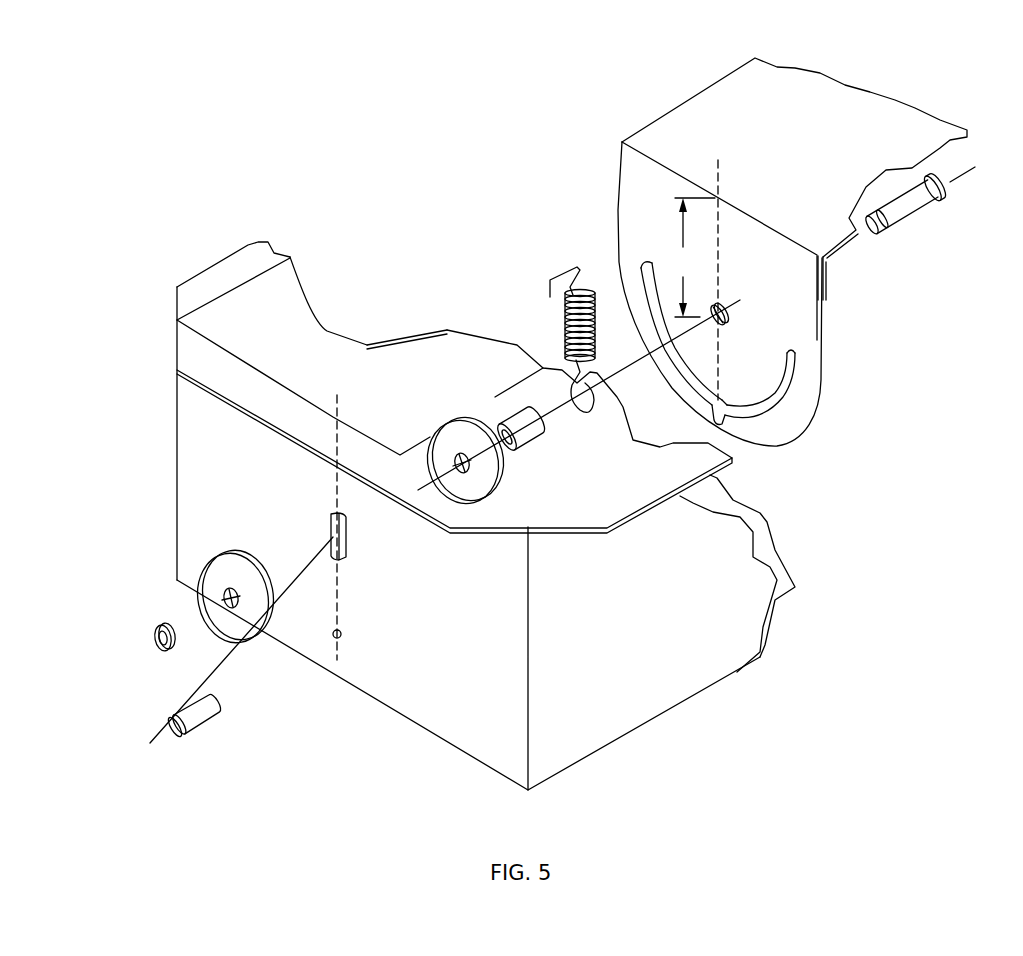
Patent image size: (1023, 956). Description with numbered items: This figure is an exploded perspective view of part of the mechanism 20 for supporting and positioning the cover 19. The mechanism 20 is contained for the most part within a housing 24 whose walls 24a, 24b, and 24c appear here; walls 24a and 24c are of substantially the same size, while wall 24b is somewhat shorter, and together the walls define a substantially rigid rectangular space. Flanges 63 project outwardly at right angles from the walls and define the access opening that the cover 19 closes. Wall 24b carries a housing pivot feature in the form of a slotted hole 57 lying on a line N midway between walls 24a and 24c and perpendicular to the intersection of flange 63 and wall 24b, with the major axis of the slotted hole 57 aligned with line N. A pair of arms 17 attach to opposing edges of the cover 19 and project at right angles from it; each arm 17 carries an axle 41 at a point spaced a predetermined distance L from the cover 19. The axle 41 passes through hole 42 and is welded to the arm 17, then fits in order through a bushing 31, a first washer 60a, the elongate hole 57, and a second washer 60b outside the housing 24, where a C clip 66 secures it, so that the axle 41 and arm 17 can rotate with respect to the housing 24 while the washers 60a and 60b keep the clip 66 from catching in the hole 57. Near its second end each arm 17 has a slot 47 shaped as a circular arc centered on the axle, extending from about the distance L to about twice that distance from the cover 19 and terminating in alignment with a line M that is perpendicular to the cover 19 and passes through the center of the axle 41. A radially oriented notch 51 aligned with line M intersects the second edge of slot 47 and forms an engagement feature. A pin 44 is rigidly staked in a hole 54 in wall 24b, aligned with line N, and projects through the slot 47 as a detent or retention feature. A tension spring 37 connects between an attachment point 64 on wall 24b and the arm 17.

The housing 24 is at (713, 567).
The first wall 24a is at (570, 725).
The second wall 24b is at (432, 712).
The third wall 24c is at (242, 328).
The mechanism 20 is at (593, 468).
The attachment point 64 is at (333, 417).
The flanges 63 is at (210, 285).
The line N is at (338, 570).
The hole 54 is at (338, 637).
The slotted hole 57 is at (330, 530).
The second washer 60b is at (230, 637).
The C clip 66 is at (157, 627).
The pin 44 is at (193, 727).
The first washer 60a is at (443, 430).
The bushing 31 is at (517, 413).
The hole 42 is at (725, 306).
The tension springs 37 is at (560, 332).
The arm 17 is at (637, 227).
The slot 47 is at (797, 397).
The notch 51 is at (757, 445).
The cover 19 is at (707, 113).
The line M is at (718, 163).
The distance L is at (695, 257).
The axle 41 is at (903, 212).